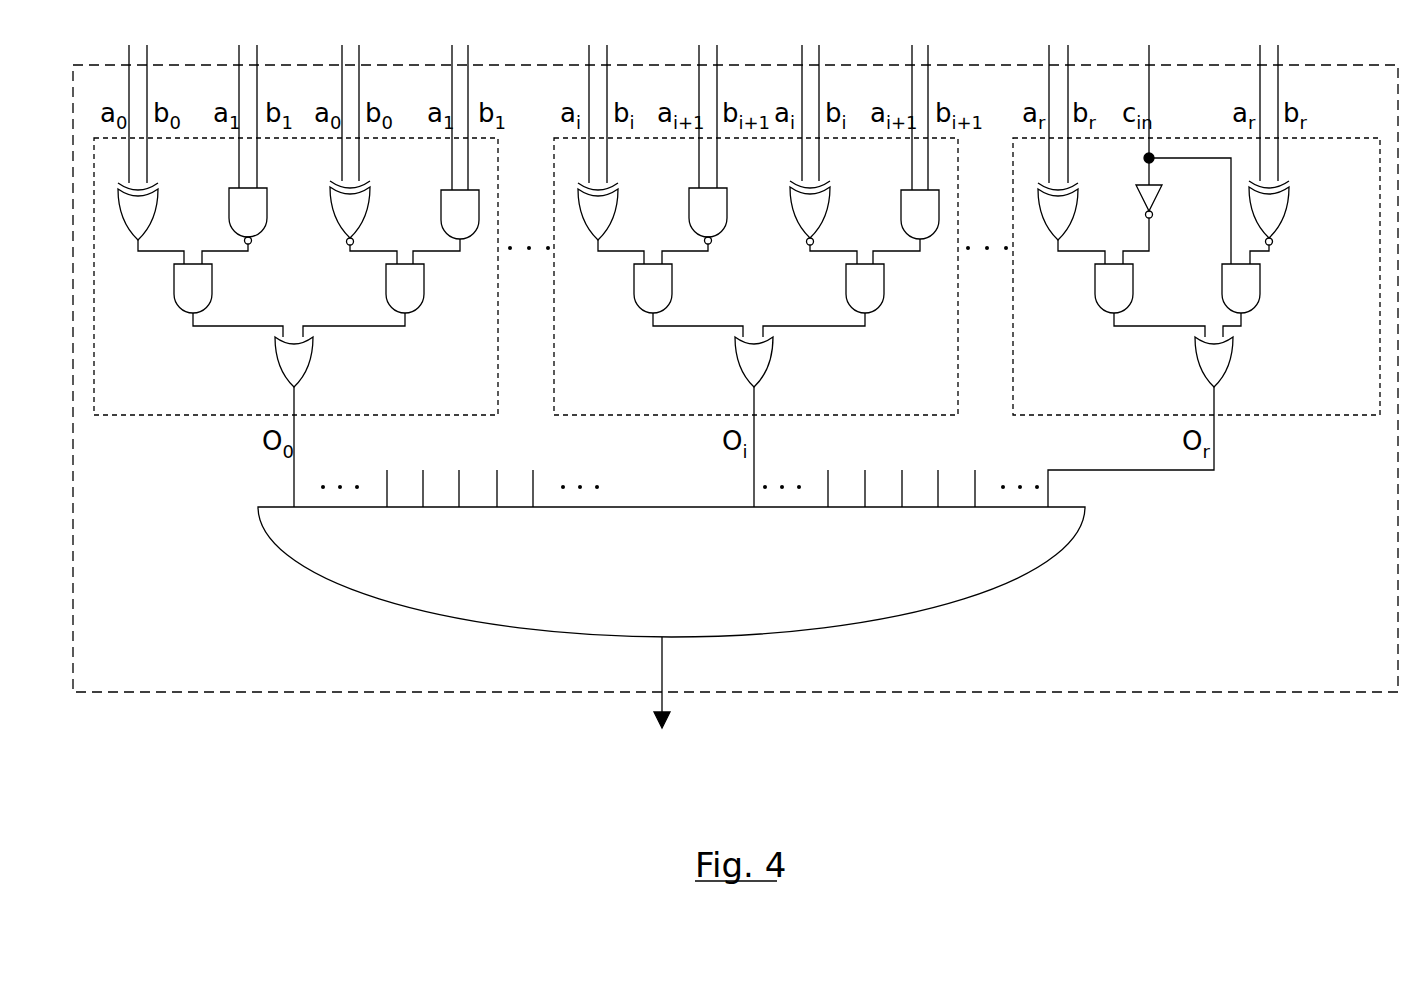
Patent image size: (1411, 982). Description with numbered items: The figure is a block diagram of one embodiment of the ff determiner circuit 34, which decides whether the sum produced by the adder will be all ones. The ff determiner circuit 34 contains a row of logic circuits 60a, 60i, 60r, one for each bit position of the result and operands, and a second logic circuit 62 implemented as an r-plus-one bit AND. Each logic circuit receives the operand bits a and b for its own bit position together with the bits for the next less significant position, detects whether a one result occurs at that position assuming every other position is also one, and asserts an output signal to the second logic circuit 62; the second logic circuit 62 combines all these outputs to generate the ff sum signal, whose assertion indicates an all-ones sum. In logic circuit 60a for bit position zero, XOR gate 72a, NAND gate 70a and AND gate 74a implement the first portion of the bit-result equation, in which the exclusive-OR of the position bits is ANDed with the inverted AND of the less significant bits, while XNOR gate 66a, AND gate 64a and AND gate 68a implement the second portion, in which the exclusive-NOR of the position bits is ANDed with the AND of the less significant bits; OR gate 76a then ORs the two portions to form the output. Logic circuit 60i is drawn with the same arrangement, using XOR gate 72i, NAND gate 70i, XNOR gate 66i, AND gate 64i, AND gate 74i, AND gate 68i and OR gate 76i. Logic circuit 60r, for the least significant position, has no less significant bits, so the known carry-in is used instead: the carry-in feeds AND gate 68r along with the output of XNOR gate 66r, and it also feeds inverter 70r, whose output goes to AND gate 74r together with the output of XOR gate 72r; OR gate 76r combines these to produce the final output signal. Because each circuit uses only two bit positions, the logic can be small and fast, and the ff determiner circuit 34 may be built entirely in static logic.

The ff determiner circuit 34 is at (1392, 679).
The second logic circuit 62 is at (772, 577).
The logic circuit 60a is at (490, 401).
The logic circuit 60i is at (756, 276).
The logic circuit 60r is at (1373, 401).
The XOR gate 72a is at (142, 212).
The NAND gate 70a is at (252, 216).
The XNOR gate 66a is at (353, 208).
The AND gate 64a is at (460, 210).
The AND gate 74a is at (205, 285).
The AND gate 68a is at (410, 307).
The OR gate 76a is at (302, 362).
The XOR gate 72i is at (631, 223).
The NAND gate 70i is at (727, 226).
The XNOR gate 66i is at (843, 222).
The AND gate 64i is at (888, 209).
The AND gate 74i is at (692, 300).
The AND gate 68i is at (859, 301).
The OR gate 76i is at (788, 422).
The XOR gate 72r is at (1062, 212).
The inverter 70r is at (1153, 205).
The XNOR gate 66r is at (1272, 210).
The AND gate 74r is at (1126, 288).
The AND gate 68r is at (1248, 290).
The OR gate 76r is at (1220, 365).